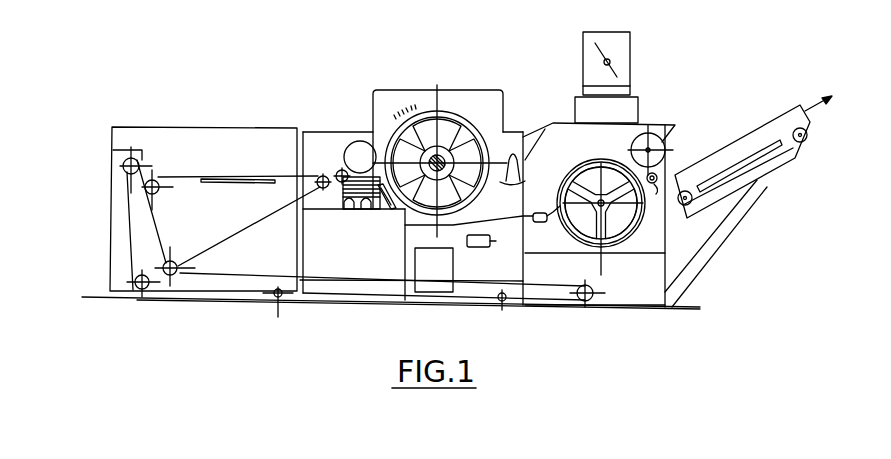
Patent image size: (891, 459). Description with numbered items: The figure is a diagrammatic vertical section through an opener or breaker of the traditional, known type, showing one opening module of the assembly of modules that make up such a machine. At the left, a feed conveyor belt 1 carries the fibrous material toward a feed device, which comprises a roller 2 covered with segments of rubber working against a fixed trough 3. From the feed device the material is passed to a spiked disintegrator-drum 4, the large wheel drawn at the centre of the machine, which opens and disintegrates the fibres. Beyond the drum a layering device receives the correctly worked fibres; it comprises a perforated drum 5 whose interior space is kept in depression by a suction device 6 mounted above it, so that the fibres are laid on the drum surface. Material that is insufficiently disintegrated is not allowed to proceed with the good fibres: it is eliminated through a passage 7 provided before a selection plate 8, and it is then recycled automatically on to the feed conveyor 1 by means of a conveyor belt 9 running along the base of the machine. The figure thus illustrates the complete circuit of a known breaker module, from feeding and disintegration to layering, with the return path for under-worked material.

The feed conveyor belt 1 is at (211, 175).
The roller 2 is at (352, 152).
The fixed trough 3 is at (345, 181).
The spiked disintegrator-drum 4 is at (438, 112).
The perforated drum 5 is at (613, 156).
The suction device 6 is at (628, 33).
The passage 7 is at (391, 209).
The selection plate 8 is at (457, 228).
The conveyor belt 9 is at (327, 282).